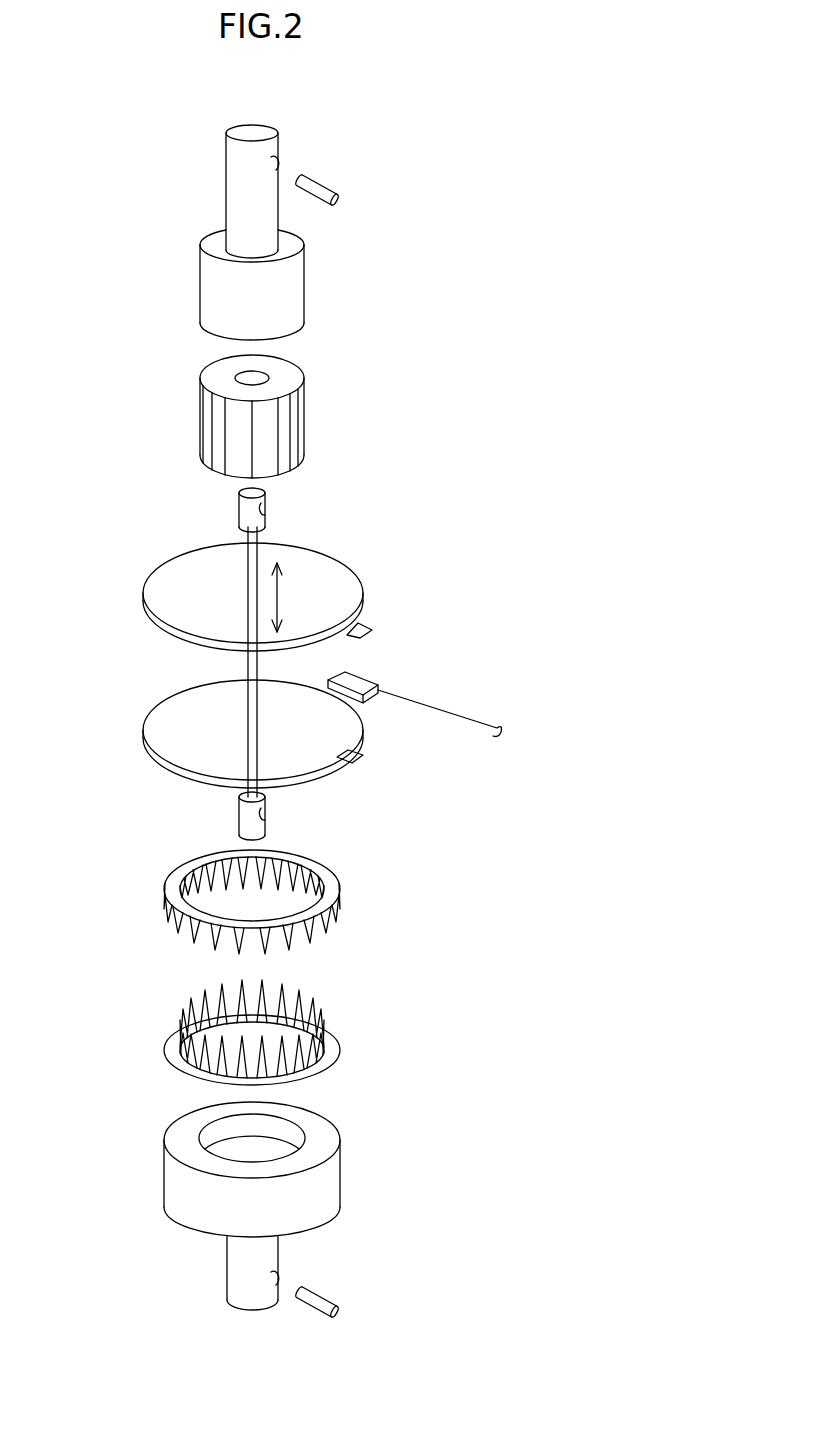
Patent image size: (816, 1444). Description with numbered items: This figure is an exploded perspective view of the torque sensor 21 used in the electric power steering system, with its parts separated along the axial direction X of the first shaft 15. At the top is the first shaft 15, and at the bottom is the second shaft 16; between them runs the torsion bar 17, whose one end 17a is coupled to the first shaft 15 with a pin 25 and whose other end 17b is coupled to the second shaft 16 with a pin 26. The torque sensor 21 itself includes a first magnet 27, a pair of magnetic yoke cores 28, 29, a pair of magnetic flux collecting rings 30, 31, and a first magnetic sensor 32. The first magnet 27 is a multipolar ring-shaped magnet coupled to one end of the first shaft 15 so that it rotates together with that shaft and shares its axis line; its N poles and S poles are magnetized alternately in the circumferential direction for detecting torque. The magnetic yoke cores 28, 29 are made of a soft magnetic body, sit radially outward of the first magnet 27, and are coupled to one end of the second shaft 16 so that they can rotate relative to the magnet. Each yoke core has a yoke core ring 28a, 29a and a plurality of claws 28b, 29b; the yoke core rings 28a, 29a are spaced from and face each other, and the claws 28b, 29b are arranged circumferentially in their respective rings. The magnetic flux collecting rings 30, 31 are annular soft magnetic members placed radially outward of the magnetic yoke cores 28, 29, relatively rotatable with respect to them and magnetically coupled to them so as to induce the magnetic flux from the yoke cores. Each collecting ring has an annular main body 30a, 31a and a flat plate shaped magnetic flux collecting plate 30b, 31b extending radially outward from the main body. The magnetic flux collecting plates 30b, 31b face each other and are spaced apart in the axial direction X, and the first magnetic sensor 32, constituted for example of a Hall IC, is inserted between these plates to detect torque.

The first shaft 15 is at (255, 134).
The second shaft 16 is at (327, 1178).
The torsion bar 17 is at (257, 541).
The one end of the torsion bar 17a is at (247, 513).
The other end of the torsion bar 17b is at (250, 822).
The torque sensor 21 is at (315, 368).
The pin 25 is at (317, 187).
The pin 26 is at (320, 1300).
The first magnet 27 is at (295, 427).
The magnetic yoke core 28 is at (338, 886).
The yoke core ring 28a is at (183, 868).
The claws 28b is at (220, 942).
The magnetic yoke core 29 is at (338, 1040).
The yoke core ring 29a is at (170, 1040).
The claws 29b is at (222, 992).
The magnetic flux collecting ring 30 is at (141, 611).
The annular main body 30a is at (158, 568).
The magnetic flux collecting plate 30b is at (365, 626).
The magnetic flux collecting ring 31 is at (141, 745).
The annular main body 31a is at (158, 705).
The magnetic flux collecting plate 31b is at (352, 765).
The first magnetic sensor 32 is at (355, 676).
The axial direction X is at (280, 593).